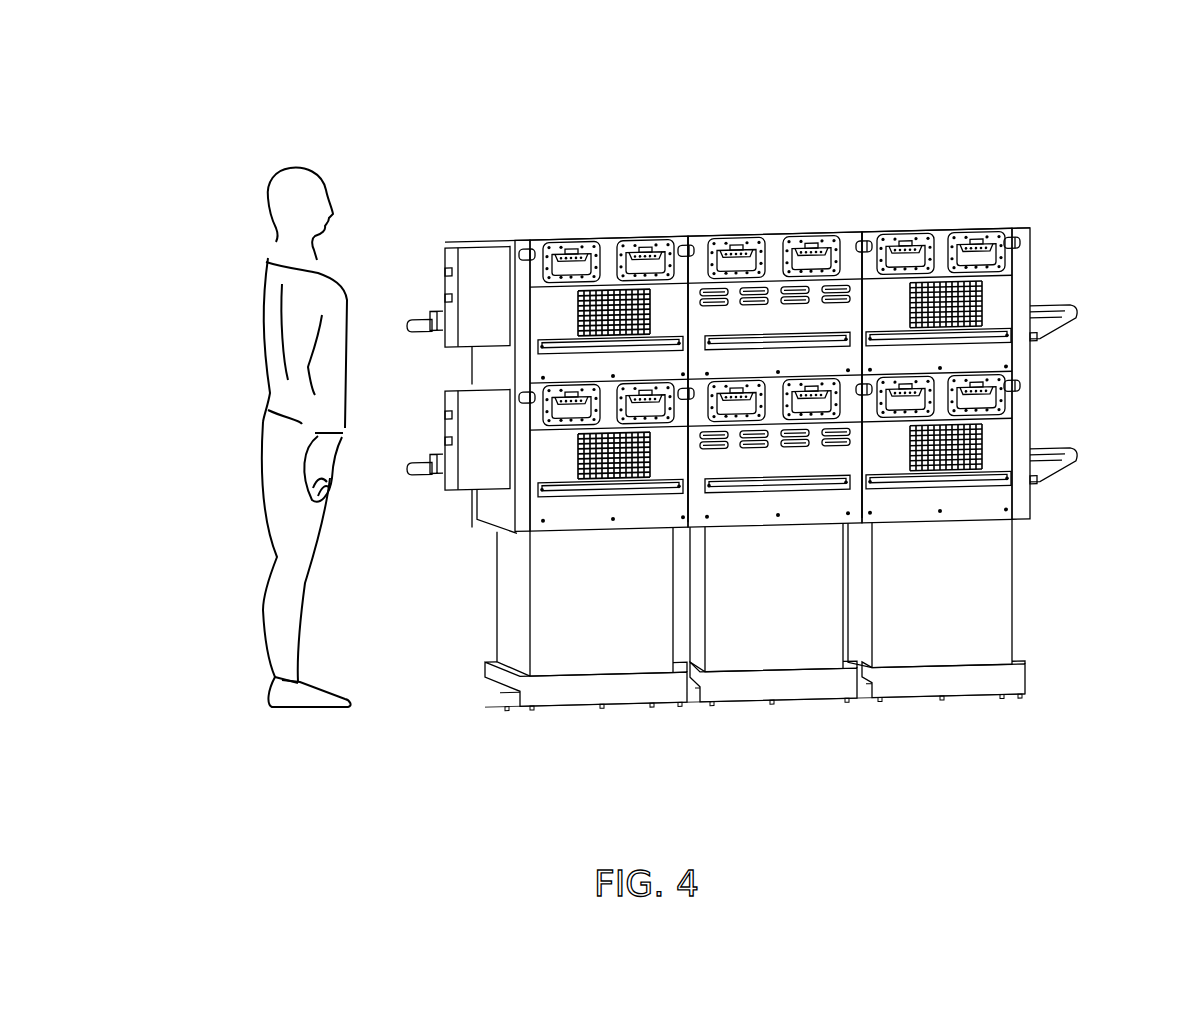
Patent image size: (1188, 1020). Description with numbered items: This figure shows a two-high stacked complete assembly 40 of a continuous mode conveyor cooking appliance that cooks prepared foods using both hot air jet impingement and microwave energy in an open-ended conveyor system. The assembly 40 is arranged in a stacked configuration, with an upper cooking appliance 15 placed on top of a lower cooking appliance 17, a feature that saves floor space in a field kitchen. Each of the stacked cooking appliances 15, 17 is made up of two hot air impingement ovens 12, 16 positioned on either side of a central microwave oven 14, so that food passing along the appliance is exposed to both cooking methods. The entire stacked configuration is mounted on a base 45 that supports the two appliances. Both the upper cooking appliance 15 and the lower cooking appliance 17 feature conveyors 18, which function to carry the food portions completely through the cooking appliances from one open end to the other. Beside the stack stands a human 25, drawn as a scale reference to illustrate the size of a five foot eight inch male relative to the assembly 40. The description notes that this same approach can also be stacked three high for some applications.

The complete assembly 40 is at (545, 78).
The hot air impingement oven 12 is at (605, 243).
The central microwave oven 14 is at (775, 247).
The hot air impingement oven 16 is at (942, 245).
The upper cooking appliance 15 is at (1030, 289).
The lower cooking appliance 17 is at (1030, 424).
The conveyor 18 is at (418, 334).
The human figure 25 is at (279, 262).
The base 45 is at (1012, 596).